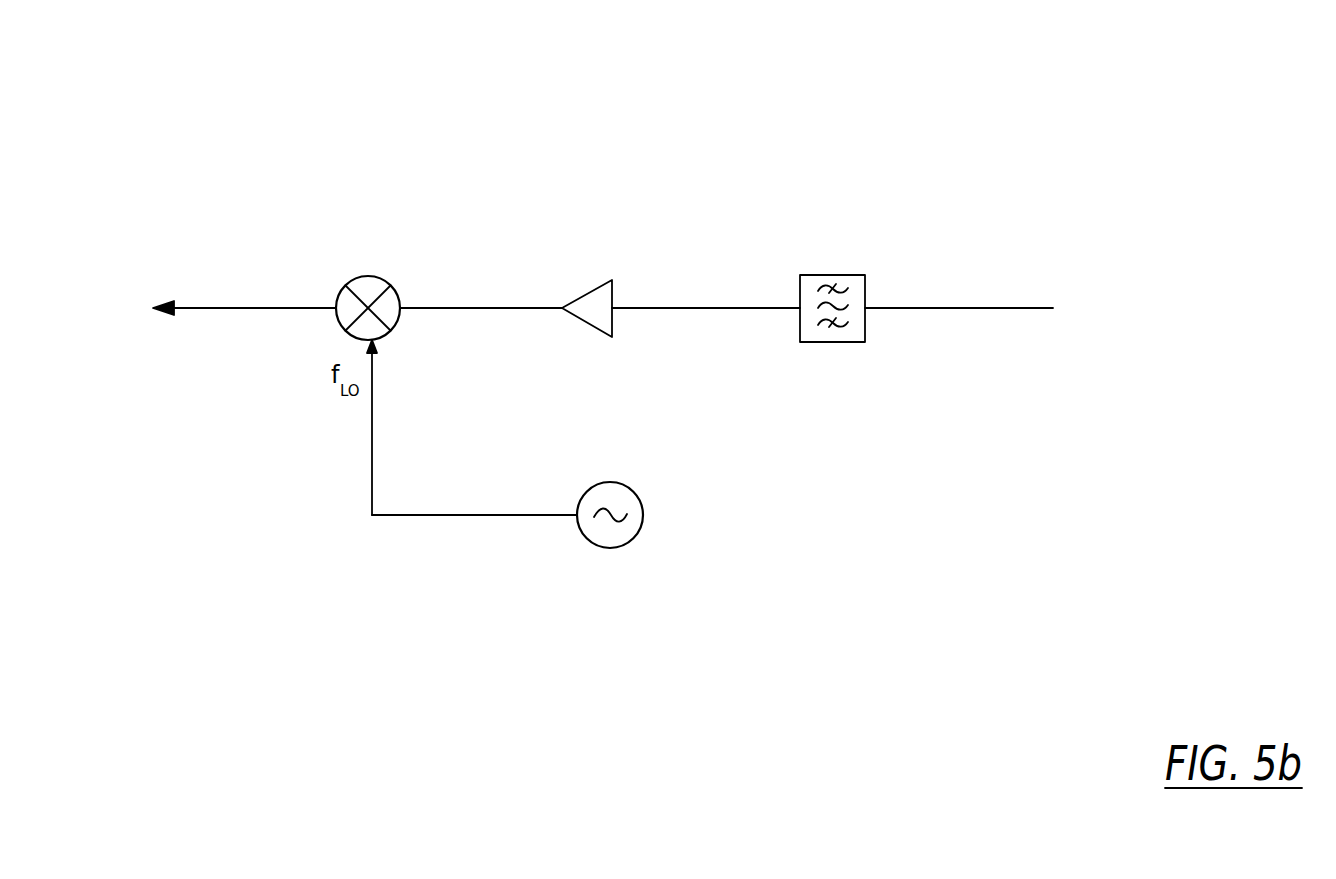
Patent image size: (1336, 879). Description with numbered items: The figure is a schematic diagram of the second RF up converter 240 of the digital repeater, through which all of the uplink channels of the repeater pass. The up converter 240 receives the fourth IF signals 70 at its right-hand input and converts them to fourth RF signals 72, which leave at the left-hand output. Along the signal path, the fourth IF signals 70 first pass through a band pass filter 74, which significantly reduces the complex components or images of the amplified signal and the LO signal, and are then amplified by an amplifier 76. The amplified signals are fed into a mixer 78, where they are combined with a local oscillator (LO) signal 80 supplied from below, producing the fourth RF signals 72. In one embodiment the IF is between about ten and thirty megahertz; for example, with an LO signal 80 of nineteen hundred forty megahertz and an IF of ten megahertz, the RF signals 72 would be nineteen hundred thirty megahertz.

The second RF up converter 240 is at (1018, 113).
The fourth IF signals 70 is at (1018, 308).
The fourth RF signals 72 is at (250, 308).
The band pass filter 74 is at (820, 275).
The amplifier 76 is at (595, 285).
The mixer 78 is at (369, 276).
The local oscillator (LO) signal 80 is at (478, 515).